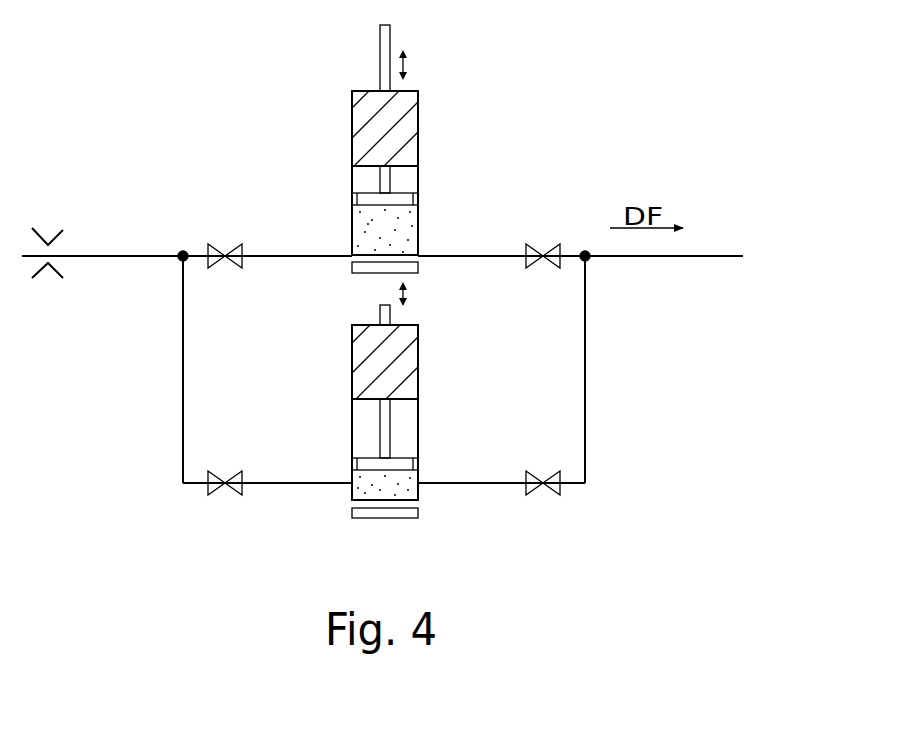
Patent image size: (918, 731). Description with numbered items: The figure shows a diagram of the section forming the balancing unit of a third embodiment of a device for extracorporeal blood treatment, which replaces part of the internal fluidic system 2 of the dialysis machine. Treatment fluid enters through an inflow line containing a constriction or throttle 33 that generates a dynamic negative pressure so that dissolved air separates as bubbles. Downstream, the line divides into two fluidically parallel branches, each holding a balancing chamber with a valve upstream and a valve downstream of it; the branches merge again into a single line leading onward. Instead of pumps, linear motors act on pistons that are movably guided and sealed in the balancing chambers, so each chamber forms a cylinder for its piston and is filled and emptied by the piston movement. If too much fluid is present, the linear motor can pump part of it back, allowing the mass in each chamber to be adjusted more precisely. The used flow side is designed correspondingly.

The internal fluidic system 2 is at (752, 122).
The constriction or throttle 33 is at (48, 243).